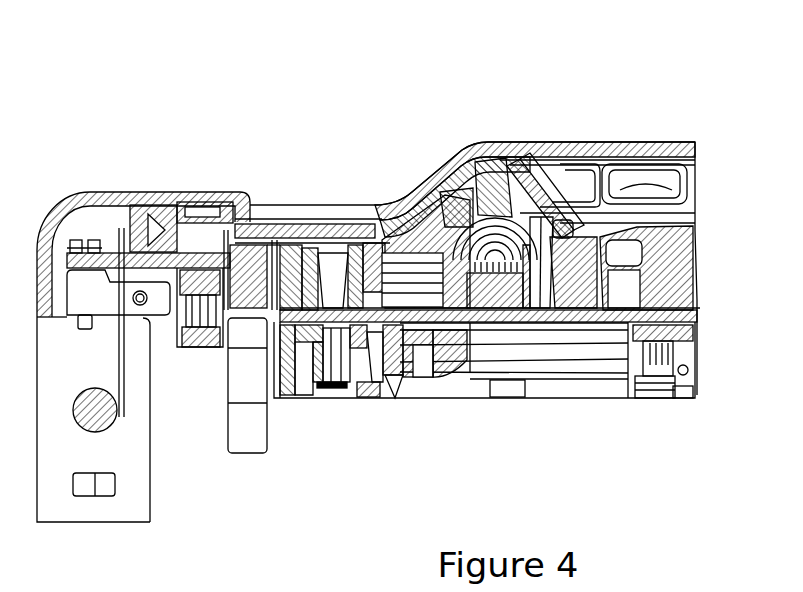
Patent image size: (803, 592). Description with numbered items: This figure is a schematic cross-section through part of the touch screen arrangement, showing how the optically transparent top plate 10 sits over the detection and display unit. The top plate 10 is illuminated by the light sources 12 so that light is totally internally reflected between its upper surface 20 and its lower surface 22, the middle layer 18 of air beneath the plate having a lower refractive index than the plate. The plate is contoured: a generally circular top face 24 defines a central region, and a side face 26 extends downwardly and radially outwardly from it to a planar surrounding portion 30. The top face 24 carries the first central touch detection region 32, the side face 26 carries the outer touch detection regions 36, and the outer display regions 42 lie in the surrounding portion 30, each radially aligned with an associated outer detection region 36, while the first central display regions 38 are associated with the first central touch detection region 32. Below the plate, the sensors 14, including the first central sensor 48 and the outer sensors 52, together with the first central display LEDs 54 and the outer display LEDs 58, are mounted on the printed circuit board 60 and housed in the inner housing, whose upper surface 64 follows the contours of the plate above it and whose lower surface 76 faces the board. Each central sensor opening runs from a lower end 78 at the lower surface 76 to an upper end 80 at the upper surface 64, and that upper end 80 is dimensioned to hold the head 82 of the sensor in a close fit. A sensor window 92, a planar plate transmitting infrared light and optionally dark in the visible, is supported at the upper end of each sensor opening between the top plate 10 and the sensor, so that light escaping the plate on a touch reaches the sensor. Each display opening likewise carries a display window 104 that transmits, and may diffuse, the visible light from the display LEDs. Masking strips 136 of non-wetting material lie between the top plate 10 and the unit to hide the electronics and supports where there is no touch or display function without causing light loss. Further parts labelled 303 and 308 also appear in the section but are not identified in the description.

The top plate 10 is at (683, 147).
The light sources 12 is at (163, 218).
The sensors 14 is at (470, 190).
The middle layer 18 is at (508, 168).
The upper surface 20 is at (668, 150).
The lower surface 22 is at (688, 162).
The top face 24 is at (650, 133).
The side face 26 is at (407, 178).
The surrounding portion 30 is at (277, 207).
The first central touch detection region 32 is at (617, 143).
The outer touch detection regions 36 is at (425, 180).
The first central display regions 38 is at (540, 148).
The outer display regions 42 is at (322, 223).
The first central sensor 48 is at (597, 322).
The outer sensors 52 is at (433, 323).
The first central display LEDs 54 is at (537, 322).
The outer display LEDs 58 is at (333, 315).
The printed circuit board 60 is at (693, 397).
The upper surface 64 is at (323, 218).
The lower surface 76 is at (351, 318).
The lower end 78 is at (700, 312).
The upper end 80 is at (647, 246).
The head 82 is at (632, 365).
The sensor window 92 is at (403, 325).
The display window 104 is at (497, 323).
The masking strips 136 is at (373, 215).
The cable 303 is at (93, 442).
The bracket 308 is at (118, 299).